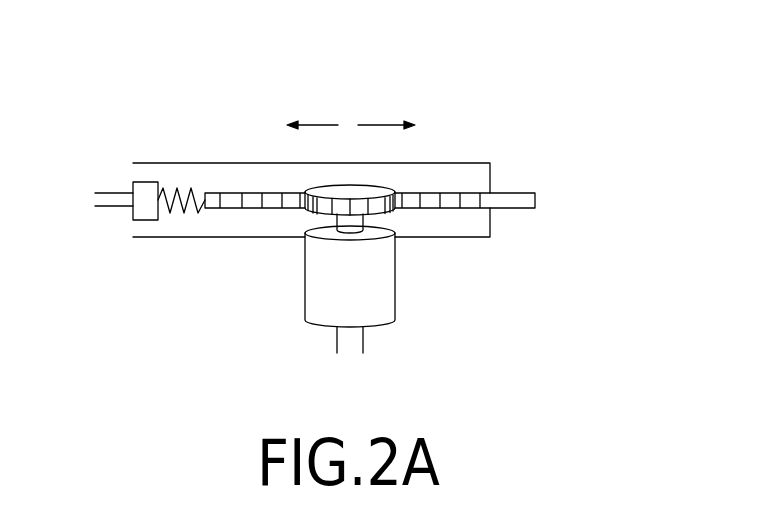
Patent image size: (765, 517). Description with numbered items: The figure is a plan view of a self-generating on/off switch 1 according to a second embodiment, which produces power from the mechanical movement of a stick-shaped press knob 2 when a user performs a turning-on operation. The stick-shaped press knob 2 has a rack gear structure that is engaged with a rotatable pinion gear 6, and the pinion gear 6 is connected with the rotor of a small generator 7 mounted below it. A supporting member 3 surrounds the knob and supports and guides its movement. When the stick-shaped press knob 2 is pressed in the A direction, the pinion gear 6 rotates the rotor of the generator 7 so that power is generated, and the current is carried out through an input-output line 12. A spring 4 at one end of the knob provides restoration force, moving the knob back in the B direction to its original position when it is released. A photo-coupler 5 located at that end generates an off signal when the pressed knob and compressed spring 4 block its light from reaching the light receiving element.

The self-generating on/off switch 1 is at (572, 13).
The stick-shaped press knob 2 is at (507, 199).
The supporting member 3 is at (467, 170).
The spring 4 is at (178, 188).
The photo-coupler 5 is at (145, 187).
The pinion gear 6 is at (377, 207).
The small generator 7 is at (313, 287).
The input-output line 12 is at (332, 338).